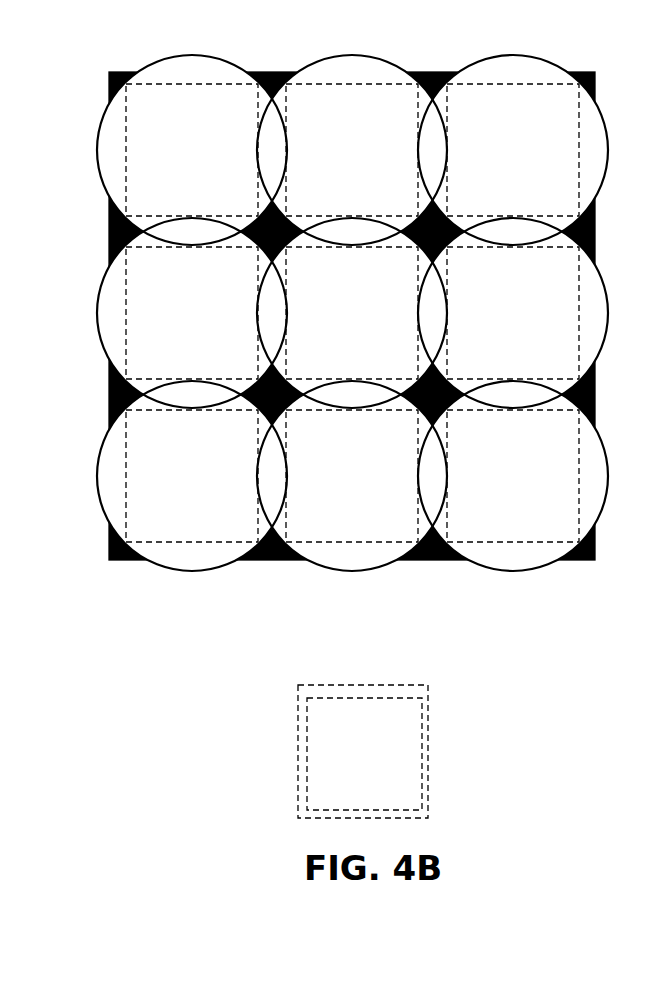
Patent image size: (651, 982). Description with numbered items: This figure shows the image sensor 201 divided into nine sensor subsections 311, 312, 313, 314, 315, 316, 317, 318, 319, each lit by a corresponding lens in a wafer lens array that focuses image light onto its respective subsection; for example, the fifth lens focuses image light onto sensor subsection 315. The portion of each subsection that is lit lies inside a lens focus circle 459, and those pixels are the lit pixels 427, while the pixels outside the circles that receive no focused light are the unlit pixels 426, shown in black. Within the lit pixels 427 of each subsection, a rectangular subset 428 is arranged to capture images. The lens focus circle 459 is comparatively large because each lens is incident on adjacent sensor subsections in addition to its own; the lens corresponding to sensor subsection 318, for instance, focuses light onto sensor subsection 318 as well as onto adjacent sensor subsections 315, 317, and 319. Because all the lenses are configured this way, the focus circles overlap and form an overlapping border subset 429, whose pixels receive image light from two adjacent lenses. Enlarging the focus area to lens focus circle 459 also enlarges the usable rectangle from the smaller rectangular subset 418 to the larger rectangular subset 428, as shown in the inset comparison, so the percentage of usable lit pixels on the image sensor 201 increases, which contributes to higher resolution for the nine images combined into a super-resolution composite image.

The image sensor 201 is at (135, 647).
The sensor subsection 311 is at (175, 161).
The sensor subsection 312 is at (335, 161).
The sensor subsection 313 is at (496, 161).
The sensor subsection 314 is at (175, 324).
The sensor subsection 315 is at (335, 324).
The sensor subsection 316 is at (496, 324).
The sensor subsection 317 is at (175, 487).
The sensor subsection 318 is at (335, 487).
The sensor subsection 319 is at (496, 487).
The rectangular subset 418 is at (317, 746).
The unlit pixels 426 is at (292, 569).
The lit pixels 427 is at (352, 565).
The rectangular subset 428 is at (400, 550).
The overlapping border subset 429 is at (261, 159).
The lens focus circle 459 is at (517, 584).